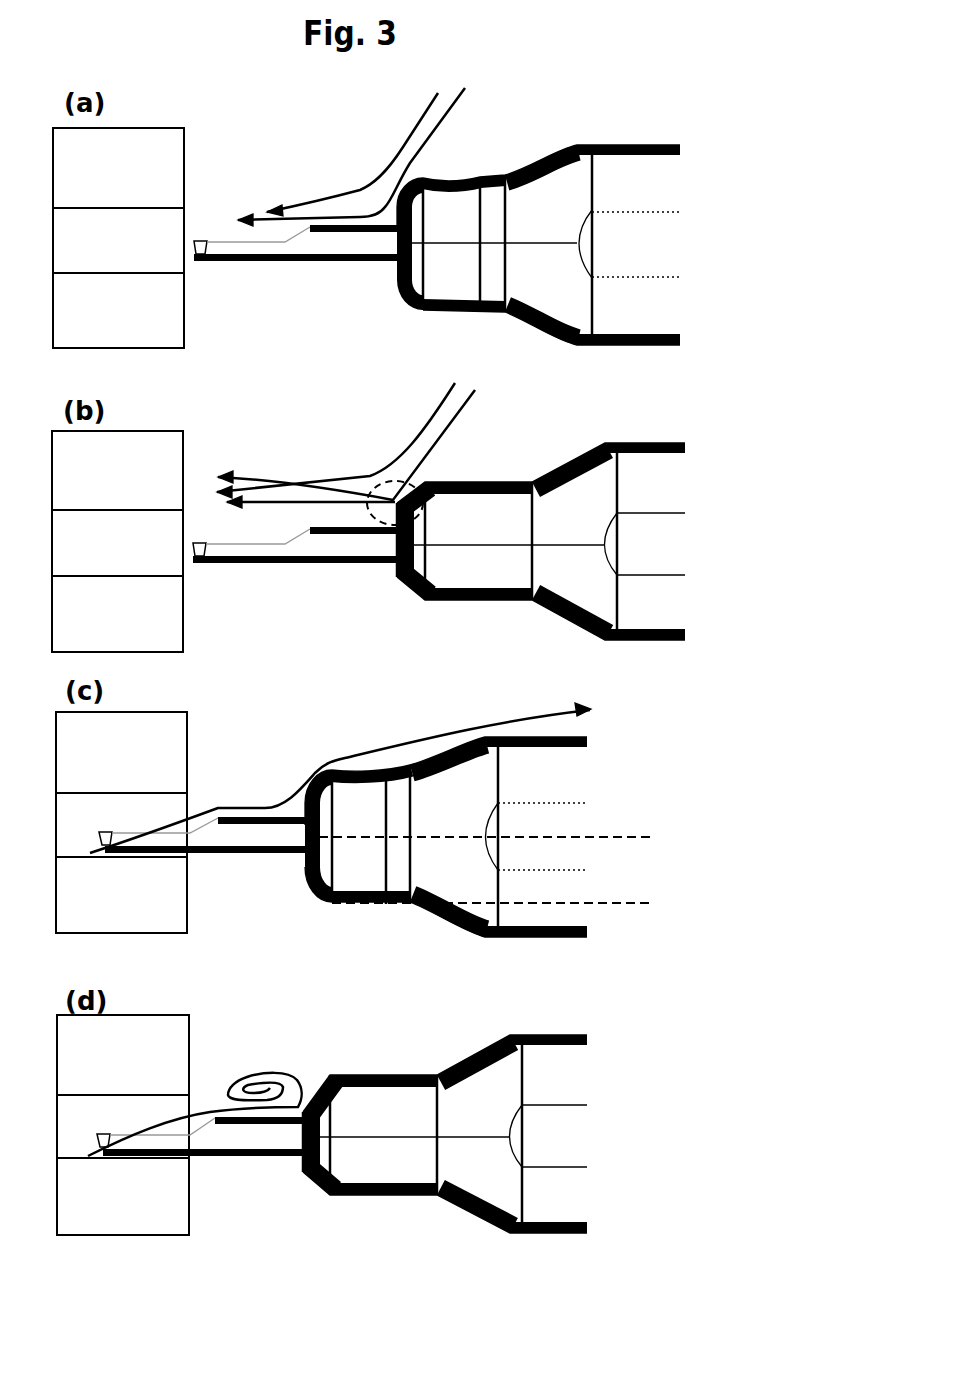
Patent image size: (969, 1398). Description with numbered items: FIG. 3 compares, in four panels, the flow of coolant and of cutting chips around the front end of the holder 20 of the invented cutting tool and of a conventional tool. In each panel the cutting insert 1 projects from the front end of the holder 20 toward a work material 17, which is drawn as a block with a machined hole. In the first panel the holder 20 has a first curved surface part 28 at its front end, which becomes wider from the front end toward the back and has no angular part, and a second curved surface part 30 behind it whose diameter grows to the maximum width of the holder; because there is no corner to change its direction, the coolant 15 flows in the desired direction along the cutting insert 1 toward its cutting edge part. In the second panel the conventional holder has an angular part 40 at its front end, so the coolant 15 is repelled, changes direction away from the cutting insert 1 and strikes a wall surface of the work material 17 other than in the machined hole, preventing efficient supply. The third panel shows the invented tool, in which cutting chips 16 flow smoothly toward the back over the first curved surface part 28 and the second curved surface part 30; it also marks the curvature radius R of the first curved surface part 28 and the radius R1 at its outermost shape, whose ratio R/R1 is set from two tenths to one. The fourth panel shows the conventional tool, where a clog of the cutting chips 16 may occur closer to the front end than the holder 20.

The cutting insert 1 is at (293, 282).
The coolant 15 is at (346, 298).
The cutting chips 16 is at (339, 923).
The work material 17 is at (175, 175).
The holder 20 is at (466, 333).
The first curved surface part 28 is at (400, 207).
The second curved surface part 30 is at (427, 177).
The angular part 40 is at (405, 510).
The curvature radius of the first curved surface part R is at (313, 912).
The radius at the outermost shape of the first curved surface part R1 is at (628, 837).